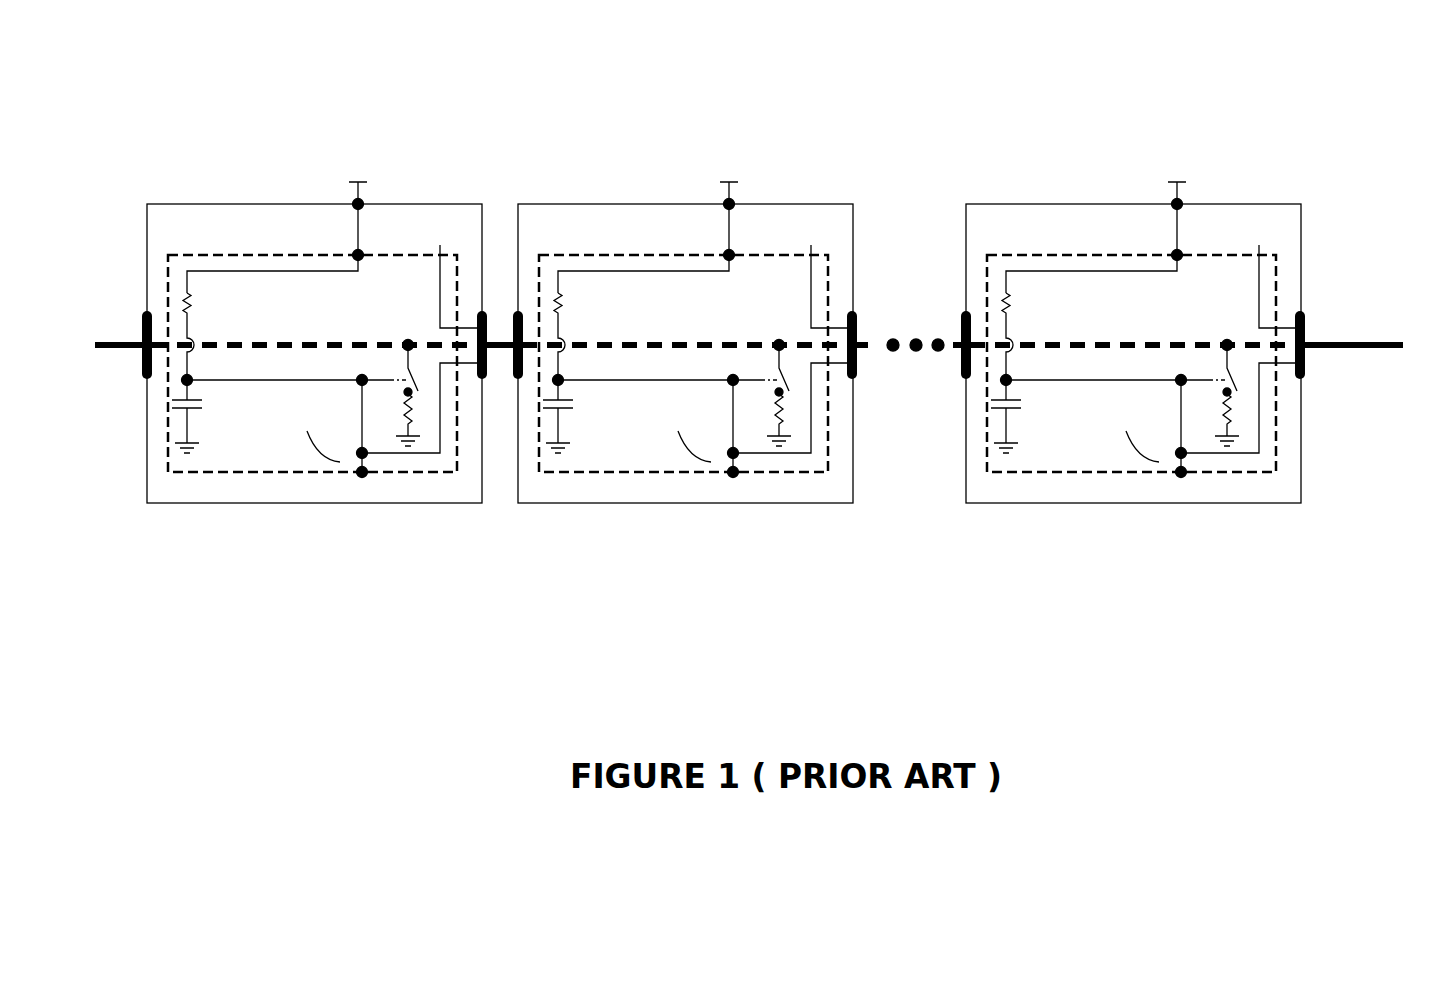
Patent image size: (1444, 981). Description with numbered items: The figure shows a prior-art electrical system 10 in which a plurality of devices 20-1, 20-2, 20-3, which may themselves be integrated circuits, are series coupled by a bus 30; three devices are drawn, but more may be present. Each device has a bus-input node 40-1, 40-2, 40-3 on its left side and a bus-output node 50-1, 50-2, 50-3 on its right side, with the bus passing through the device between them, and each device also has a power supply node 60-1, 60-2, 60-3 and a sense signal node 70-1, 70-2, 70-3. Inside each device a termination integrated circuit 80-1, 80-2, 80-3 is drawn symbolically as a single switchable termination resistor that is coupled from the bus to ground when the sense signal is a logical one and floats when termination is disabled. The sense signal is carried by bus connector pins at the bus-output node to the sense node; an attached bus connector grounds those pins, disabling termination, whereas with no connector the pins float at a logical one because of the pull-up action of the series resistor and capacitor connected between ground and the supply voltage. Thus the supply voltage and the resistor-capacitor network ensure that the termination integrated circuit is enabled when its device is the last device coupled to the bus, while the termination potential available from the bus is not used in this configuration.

The electrical system 10 is at (180, 95).
The device 20-1 is at (212, 205).
The device 20-2 is at (685, 333).
The device 20-3 is at (1133, 333).
The bus 30 is at (1358, 342).
The bus-input node 40-1 is at (142, 338).
The bus-input node 40-2 is at (508, 360).
The bus-input node 40-3 is at (953, 358).
The bus-output node 50-1 is at (486, 332).
The bus-output node 50-2 is at (857, 335).
The bus-output node 50-3 is at (1307, 331).
The power supply VCC node 60-1 is at (363, 202).
The power supply VCC node 60-2 is at (688, 208).
The power supply VCC node 60-3 is at (1136, 208).
The sense signal node 70-1 is at (352, 481).
The sense signal node 70-2 is at (681, 485).
The sense signal node 70-3 is at (1129, 485).
The termination integrated circuit 80-1 is at (322, 304).
The termination integrated circuit 80-2 is at (683, 363).
The termination integrated circuit 80-3 is at (1131, 363).